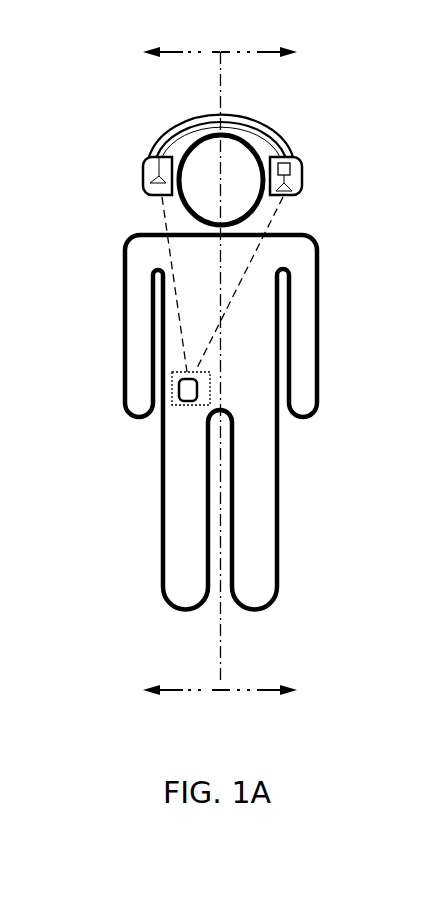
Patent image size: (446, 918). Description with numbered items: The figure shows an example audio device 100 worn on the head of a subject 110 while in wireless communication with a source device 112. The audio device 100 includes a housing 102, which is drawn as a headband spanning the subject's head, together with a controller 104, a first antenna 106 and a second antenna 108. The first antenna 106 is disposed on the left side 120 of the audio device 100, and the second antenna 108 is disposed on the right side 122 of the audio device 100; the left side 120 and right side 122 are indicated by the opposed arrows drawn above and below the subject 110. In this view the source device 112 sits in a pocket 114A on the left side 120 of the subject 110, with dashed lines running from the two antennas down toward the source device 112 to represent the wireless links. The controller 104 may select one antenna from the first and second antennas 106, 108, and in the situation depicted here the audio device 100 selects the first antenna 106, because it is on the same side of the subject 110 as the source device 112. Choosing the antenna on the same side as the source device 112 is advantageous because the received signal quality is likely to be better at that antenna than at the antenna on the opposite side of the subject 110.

The audio device 100 is at (158, 124).
The housing 102 is at (253, 118).
The controller 104 is at (292, 163).
The first antenna 106 is at (150, 176).
The second antenna 108 is at (292, 188).
The subject 110 is at (320, 313).
The source device 112 is at (189, 403).
The pocket 114A is at (210, 396).
The left side 120 is at (190, 51).
The right side 122 is at (250, 51).